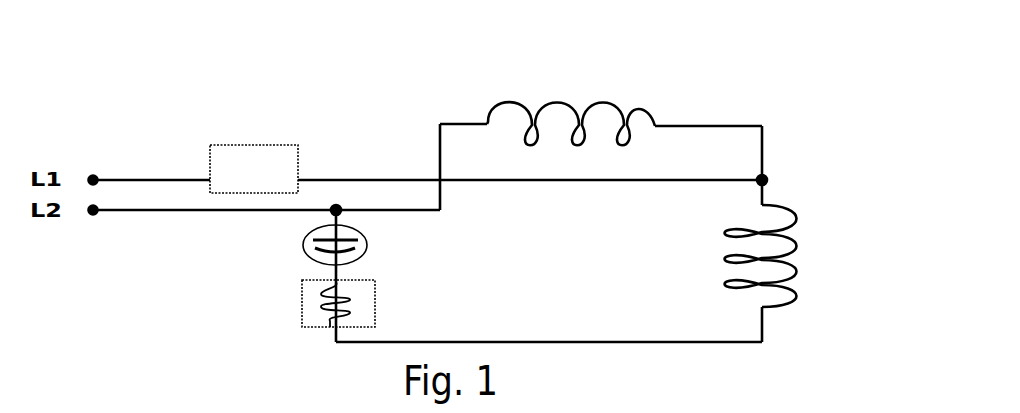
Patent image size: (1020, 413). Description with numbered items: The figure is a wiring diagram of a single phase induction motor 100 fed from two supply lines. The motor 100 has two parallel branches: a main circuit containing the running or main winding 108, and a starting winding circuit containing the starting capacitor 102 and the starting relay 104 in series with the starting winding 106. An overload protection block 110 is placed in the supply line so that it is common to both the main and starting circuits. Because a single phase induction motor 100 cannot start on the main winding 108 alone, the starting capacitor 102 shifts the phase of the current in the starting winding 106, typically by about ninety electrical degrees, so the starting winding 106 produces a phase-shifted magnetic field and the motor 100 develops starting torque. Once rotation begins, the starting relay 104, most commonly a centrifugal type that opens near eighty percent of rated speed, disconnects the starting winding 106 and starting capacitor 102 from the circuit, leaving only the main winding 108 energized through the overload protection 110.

The single phase induction motor 100 is at (777, 80).
The starting capacitor 102 is at (353, 265).
The starting relay 104 is at (362, 327).
The starting winding 106 is at (795, 230).
The running or main winding 108 is at (628, 110).
The overload 110 is at (293, 168).